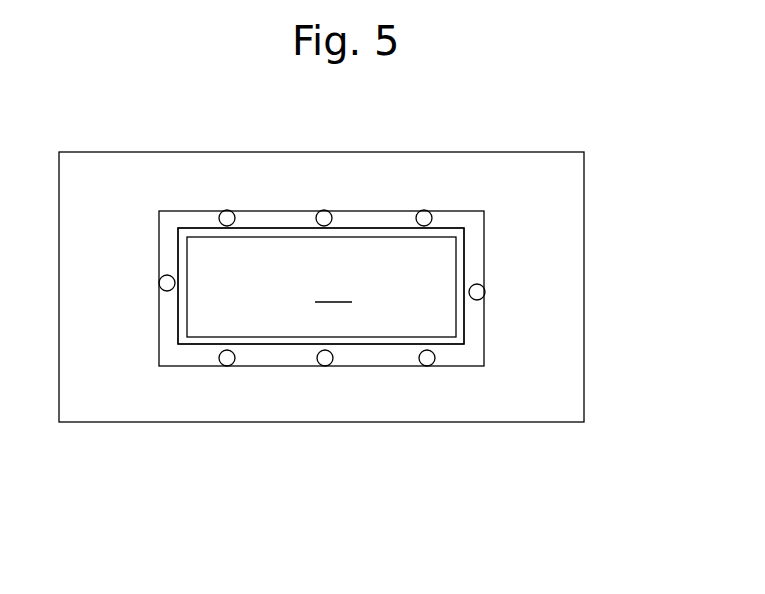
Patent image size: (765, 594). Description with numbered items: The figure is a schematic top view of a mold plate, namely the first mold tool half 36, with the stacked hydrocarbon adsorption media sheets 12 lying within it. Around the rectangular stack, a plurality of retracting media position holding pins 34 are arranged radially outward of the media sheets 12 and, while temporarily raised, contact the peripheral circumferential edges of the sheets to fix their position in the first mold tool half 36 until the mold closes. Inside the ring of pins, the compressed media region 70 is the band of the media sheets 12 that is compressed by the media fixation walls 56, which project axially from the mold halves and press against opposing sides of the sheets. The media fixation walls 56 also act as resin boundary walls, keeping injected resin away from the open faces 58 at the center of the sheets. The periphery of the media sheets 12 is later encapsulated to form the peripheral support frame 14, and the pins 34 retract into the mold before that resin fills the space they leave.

The hydrocarbon adsorption media sheet 12 is at (267, 253).
The peripheral support frame 14 is at (460, 220).
The retracting media position holding pins 34 is at (324, 210).
The first mold tool half 36 is at (537, 223).
The media fixation walls 56 is at (462, 269).
The open faces 58 is at (335, 284).
The compressed media region 70 is at (463, 238).